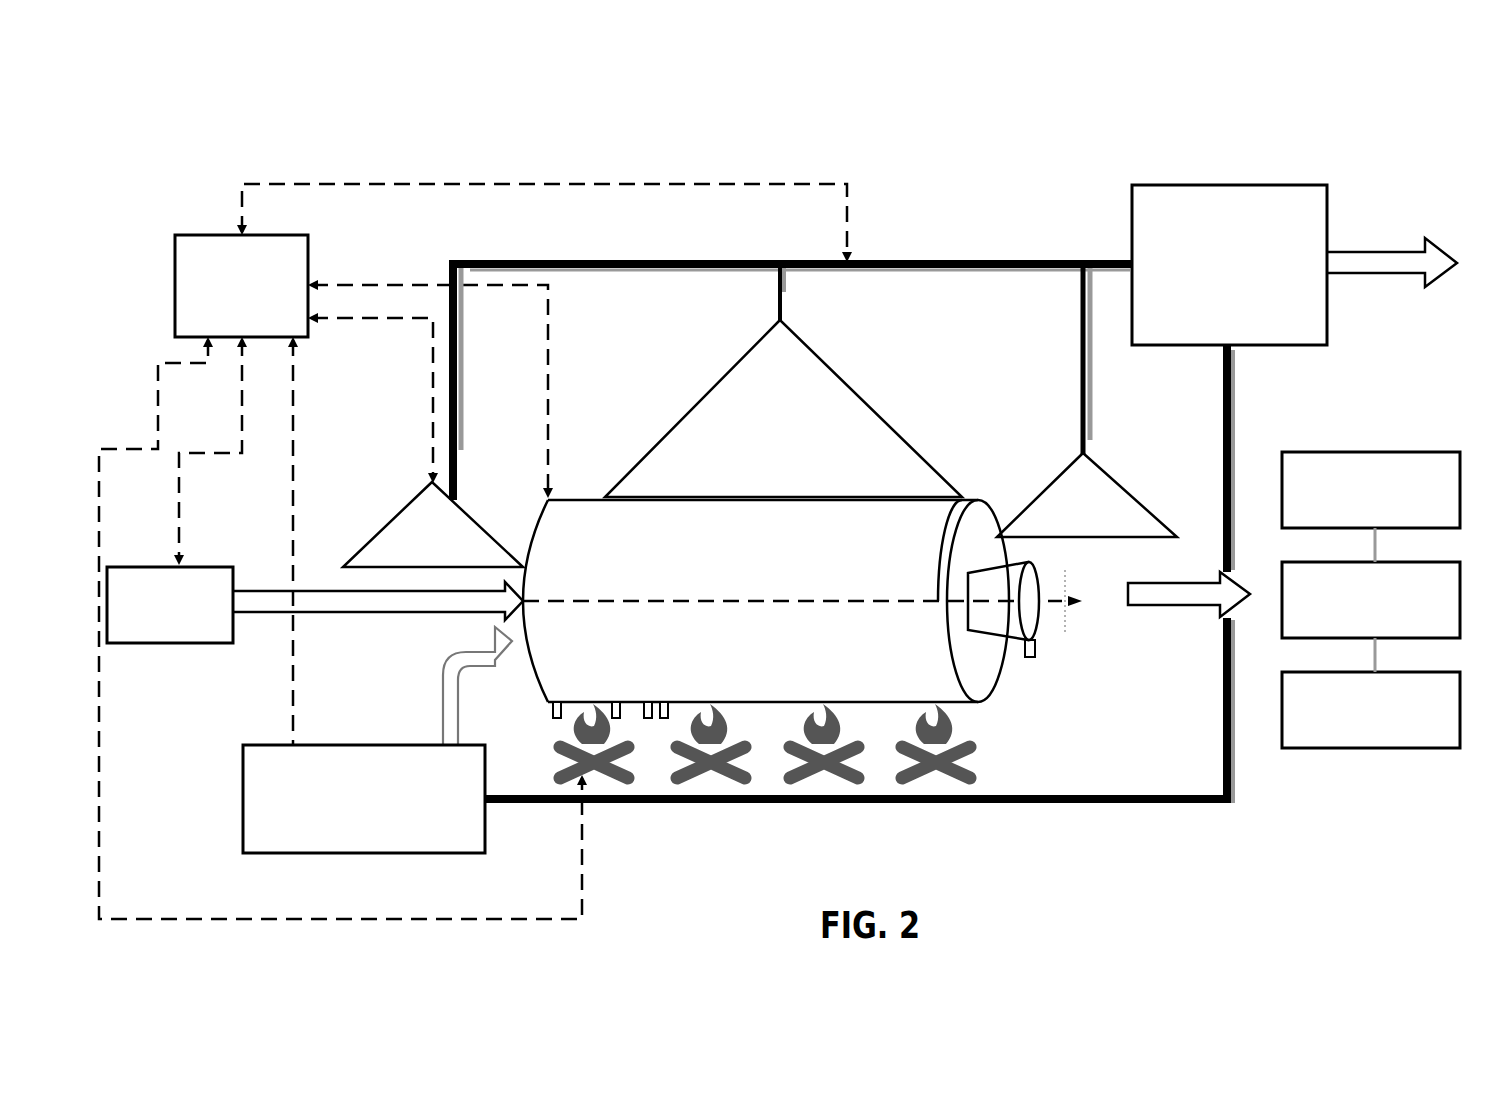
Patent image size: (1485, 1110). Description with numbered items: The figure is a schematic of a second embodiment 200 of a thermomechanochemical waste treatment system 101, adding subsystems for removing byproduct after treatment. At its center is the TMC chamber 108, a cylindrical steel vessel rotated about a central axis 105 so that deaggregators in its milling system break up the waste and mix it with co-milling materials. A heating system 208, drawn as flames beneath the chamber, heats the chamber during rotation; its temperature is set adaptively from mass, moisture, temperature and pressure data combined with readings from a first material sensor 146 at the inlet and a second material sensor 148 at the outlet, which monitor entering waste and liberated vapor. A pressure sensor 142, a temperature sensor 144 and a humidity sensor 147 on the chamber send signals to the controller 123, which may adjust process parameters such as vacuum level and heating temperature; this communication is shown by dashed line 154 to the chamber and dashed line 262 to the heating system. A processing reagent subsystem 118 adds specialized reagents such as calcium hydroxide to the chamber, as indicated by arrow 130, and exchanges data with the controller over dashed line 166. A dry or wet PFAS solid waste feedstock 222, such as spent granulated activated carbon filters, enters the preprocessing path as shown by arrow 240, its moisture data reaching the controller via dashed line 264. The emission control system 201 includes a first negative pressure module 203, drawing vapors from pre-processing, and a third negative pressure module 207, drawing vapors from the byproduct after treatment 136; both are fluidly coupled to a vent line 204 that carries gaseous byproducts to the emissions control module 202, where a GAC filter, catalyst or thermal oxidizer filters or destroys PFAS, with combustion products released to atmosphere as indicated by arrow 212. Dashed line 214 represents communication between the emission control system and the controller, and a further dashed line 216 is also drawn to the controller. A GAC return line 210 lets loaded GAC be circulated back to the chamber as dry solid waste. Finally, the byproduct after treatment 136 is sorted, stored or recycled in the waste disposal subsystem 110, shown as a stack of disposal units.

The second embodiment 200 is at (1388, 101).
The thermomechanochemical (TMC) waste treatment system 101 is at (207, 128).
The emission control system 201 is at (1073, 140).
The controller 123 is at (241, 286).
The dashed line 214 is at (458, 187).
The dashed line 154 is at (355, 283).
The communication line 216 is at (432, 352).
The dashed line 166 is at (242, 405).
The dashed line 264 is at (293, 487).
The dashed line 262 is at (99, 782).
The processing reagent subsystem 118 is at (200, 565).
The arrow 130 is at (340, 613).
The arrow 240 is at (443, 705).
The dry or wet PFAS solid waste feedstock 222 is at (398, 853).
The vent line 204 is at (725, 260).
The first negative pressure module 203 is at (460, 514).
The central axis 105 is at (942, 505).
The third negative pressure module 207 is at (1138, 500).
The TMC chamber 108 is at (536, 680).
The second material sensor 148 is at (1030, 657).
The byproduct after treatment 136 is at (1135, 607).
The GAC return line 210 is at (1020, 805).
The heating system 208 is at (1005, 769).
The first material sensor 146 is at (557, 718).
The humidity sensor 147 is at (616, 718).
The pressure sensor 142 is at (648, 718).
The temperature sensor 144 is at (664, 718).
The emissions control module 202 is at (1215, 185).
The arrow 212 is at (1370, 252).
The waste disposal subsystem 110 is at (1345, 420).